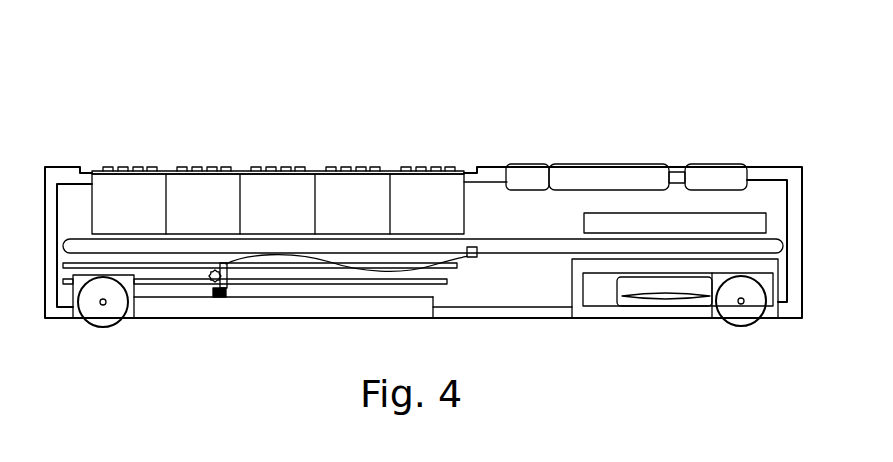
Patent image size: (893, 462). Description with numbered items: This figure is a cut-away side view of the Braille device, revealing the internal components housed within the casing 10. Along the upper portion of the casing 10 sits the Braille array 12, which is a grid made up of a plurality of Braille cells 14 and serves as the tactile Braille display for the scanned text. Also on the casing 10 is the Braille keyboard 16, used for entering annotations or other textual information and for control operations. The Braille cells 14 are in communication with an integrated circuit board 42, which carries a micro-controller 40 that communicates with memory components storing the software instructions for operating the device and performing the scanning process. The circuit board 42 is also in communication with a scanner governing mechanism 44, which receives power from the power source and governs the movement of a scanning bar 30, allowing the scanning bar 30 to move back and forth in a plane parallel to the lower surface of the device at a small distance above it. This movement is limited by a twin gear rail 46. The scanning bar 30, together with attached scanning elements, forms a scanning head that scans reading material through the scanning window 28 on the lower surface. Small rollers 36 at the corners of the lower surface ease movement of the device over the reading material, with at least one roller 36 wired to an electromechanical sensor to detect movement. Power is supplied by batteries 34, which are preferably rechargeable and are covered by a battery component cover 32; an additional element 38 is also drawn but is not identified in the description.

The casing 10 is at (44, 181).
The Braille array 12 is at (247, 165).
The Braille cells 14 is at (145, 170).
The Braille keyboard 16 is at (583, 160).
The scanning window 28 is at (217, 298).
The scanning bar 30 is at (168, 284).
The battery component cover 32 is at (632, 318).
The batteries 34 is at (675, 285).
The rollers 36 is at (102, 325).
The drive unit housing 38 is at (612, 295).
The micro-controller 40 is at (603, 222).
The integrated circuit board 42 is at (495, 244).
The scanner governing mechanism 44 is at (470, 258).
The twin gear rail 46 is at (315, 273).